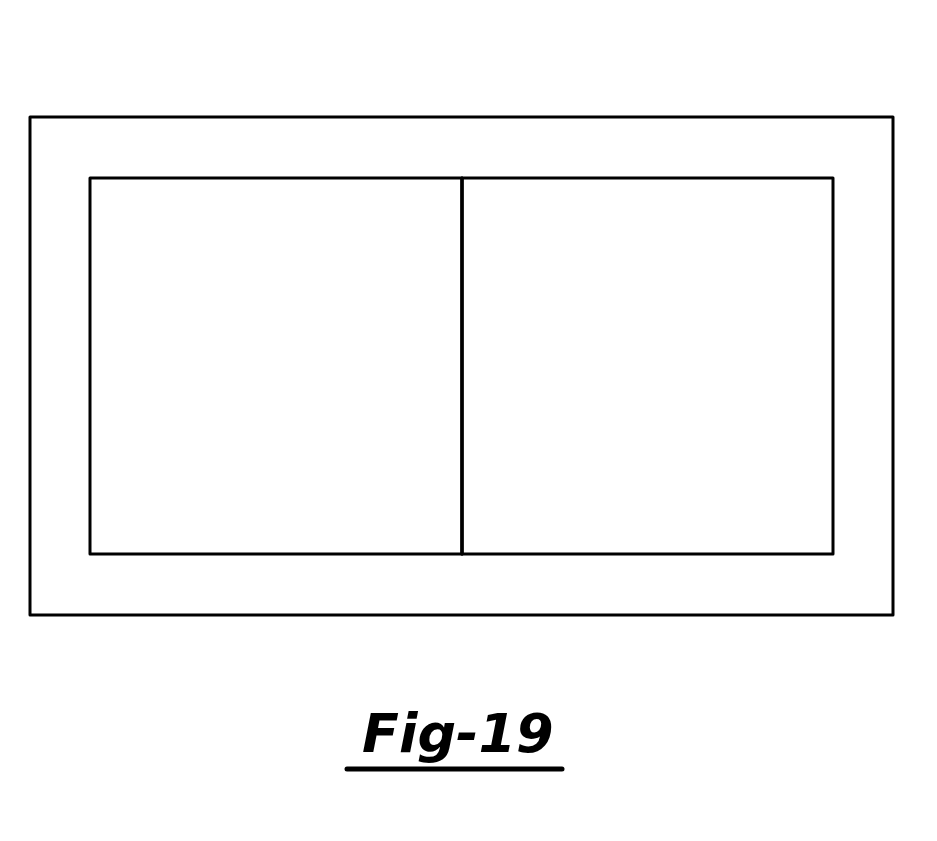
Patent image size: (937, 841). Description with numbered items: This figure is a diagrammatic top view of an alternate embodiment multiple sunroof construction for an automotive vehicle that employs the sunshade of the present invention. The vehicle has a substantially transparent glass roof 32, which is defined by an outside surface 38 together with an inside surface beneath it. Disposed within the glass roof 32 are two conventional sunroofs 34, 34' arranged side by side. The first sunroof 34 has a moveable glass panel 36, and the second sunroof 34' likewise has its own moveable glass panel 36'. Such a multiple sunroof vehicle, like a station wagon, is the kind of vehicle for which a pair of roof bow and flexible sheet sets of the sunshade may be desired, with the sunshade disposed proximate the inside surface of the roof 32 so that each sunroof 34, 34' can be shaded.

The glass roof 32 is at (495, 150).
The sunroof 34 is at (276, 299).
The sunroof 34' is at (647, 304).
The moveable glass panel 36 is at (265, 331).
The moveable glass panel 36' is at (666, 331).
The outside surface 38 is at (57, 583).